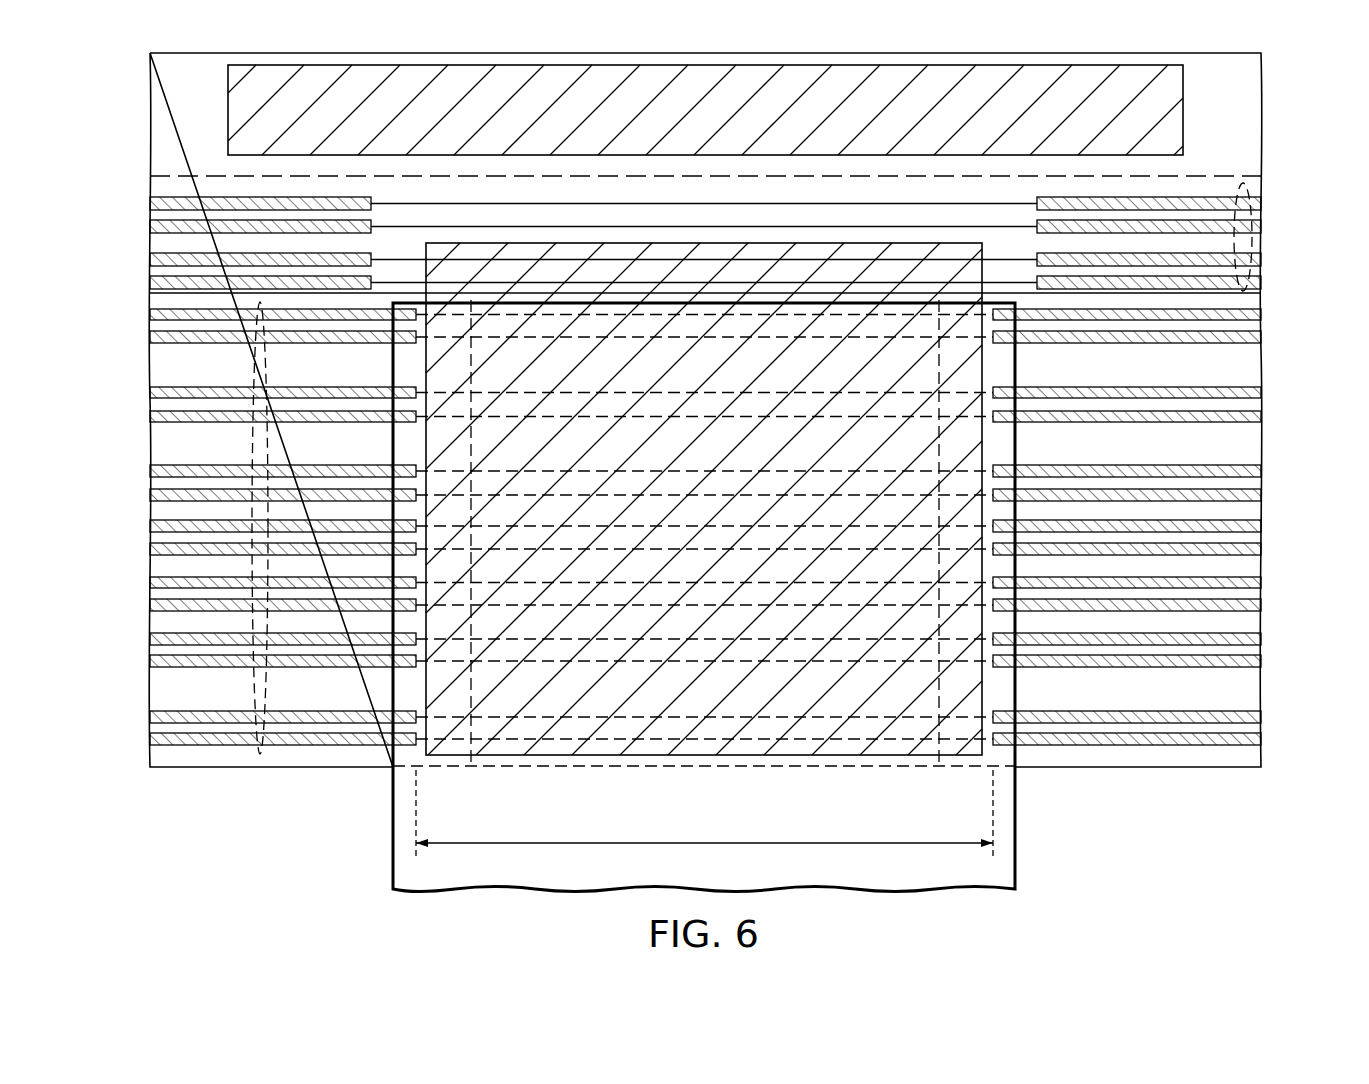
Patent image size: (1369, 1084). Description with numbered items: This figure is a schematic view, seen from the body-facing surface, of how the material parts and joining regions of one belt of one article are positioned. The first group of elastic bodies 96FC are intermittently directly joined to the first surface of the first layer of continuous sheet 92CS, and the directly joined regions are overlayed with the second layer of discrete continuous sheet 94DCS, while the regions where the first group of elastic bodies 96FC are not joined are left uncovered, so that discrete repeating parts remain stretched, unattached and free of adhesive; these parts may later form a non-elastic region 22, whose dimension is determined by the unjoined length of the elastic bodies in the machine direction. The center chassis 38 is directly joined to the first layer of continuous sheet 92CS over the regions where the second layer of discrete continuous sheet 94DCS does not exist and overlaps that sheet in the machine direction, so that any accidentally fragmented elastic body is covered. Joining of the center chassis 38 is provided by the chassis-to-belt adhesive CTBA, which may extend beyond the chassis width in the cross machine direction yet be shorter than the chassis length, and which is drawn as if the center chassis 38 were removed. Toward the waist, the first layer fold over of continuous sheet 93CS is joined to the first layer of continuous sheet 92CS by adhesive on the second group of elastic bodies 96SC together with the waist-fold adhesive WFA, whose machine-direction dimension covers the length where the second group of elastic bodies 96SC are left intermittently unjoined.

The first layer fold over of continuous sheet 93CS is at (1232, 97).
The waist-fold adhesive WFA is at (227, 105).
The first layer of continuous sheet 92CS is at (190, 245).
The second group of elastic bodies 96SC is at (1241, 187).
The second layer of discrete continuous sheet 94DCS is at (168, 680).
The first group of elastic bodies 96FC is at (258, 755).
The center chassis 38 is at (1015, 813).
The chassis-to-belt adhesive CTBA is at (647, 758).
The non-elastic region 22 is at (704, 813).